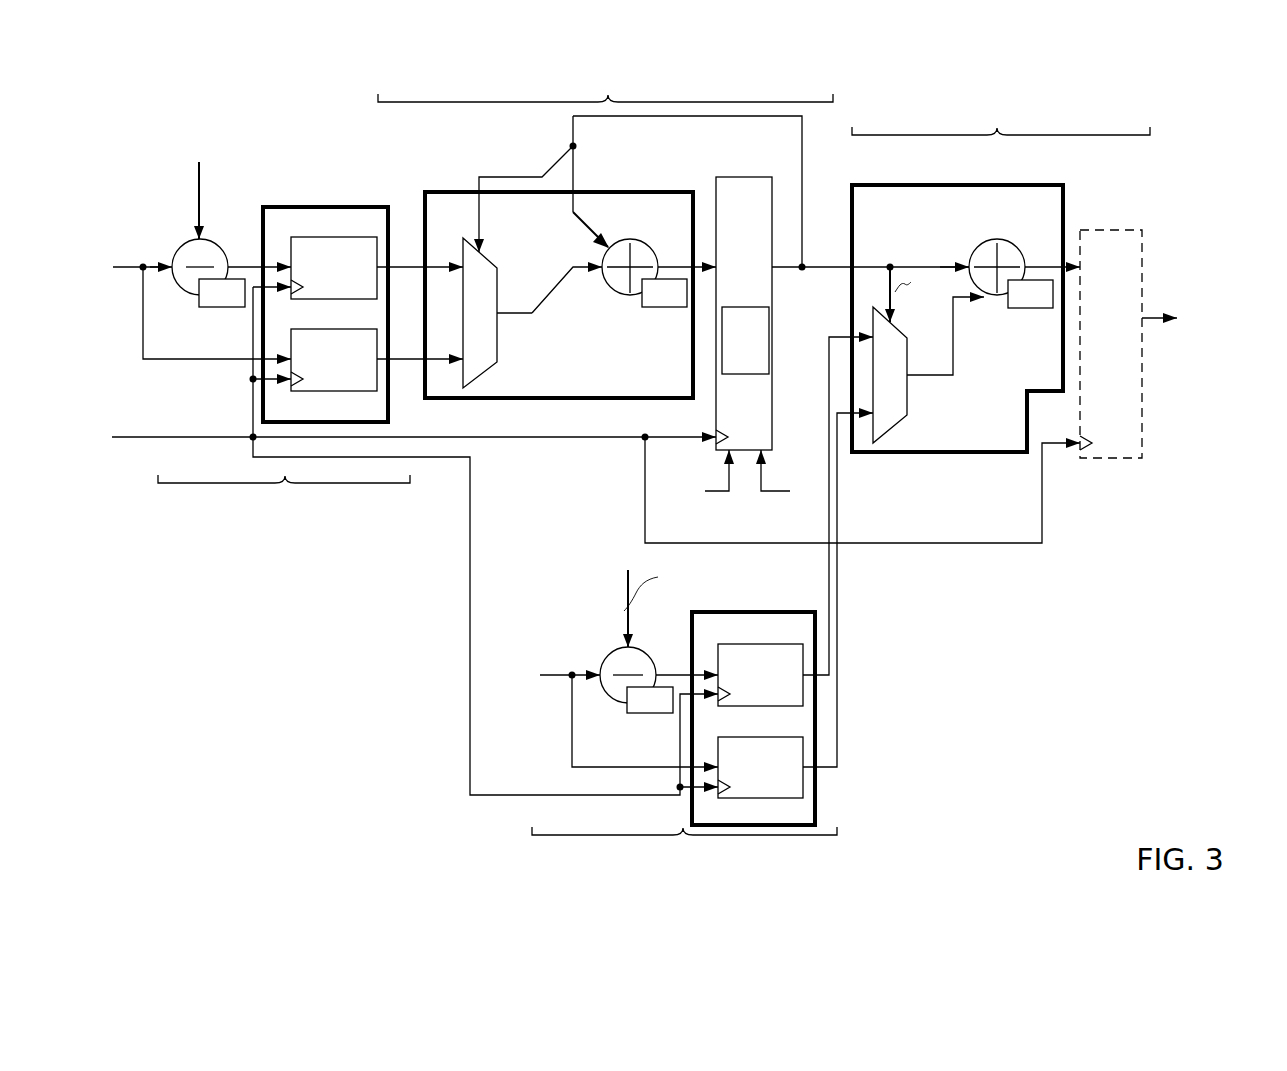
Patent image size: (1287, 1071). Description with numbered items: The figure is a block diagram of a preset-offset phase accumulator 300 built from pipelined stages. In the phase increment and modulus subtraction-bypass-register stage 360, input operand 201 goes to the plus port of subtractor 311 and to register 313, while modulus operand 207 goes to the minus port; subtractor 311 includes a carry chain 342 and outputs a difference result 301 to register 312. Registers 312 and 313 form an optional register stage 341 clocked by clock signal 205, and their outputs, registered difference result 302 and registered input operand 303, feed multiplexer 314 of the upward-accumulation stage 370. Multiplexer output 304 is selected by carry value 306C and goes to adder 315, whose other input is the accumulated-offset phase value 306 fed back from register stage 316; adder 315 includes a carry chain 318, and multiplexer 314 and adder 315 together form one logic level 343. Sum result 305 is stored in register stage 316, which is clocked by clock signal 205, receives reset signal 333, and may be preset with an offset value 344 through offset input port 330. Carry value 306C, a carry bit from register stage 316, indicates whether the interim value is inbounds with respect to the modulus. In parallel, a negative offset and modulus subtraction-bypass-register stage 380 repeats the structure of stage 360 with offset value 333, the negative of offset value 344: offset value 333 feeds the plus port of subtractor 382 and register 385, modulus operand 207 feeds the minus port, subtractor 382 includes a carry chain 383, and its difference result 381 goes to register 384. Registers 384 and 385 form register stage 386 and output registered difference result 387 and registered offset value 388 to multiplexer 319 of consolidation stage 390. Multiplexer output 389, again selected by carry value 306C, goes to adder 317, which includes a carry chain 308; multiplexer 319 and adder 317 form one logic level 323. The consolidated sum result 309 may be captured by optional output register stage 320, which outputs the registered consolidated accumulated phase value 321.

The preset-offset phase accumulator 300 is at (223, 85).
The input operand 201 is at (124, 262).
The modulus operand 207 is at (202, 185).
The difference result 301 is at (220, 262).
The subtractor 311 is at (181, 292).
The carry chain 342 is at (227, 309).
The register stage 341 is at (296, 207).
The register 312 is at (331, 238).
The register 313 is at (340, 410).
The registered difference result 302 is at (408, 262).
The registered input operand 303 is at (396, 362).
The logic level 343 is at (542, 400).
The multiplexer output 304 is at (559, 269).
The multiplexer 314 is at (500, 330).
The adder 315 is at (611, 294).
The carry value 306C is at (482, 176).
The sum result 305 is at (663, 244).
The carry chain 318 is at (660, 310).
The accumulated-offset phase value 306 is at (590, 210).
The register stage 316 is at (730, 178).
The offset value 344 is at (745, 340).
The upward-accumulation stage 370 is at (605, 86).
The clock signal 205 is at (206, 440).
The phase increment and modulus subtraction-bypass-register stage 360 is at (284, 497).
The offset value 333 is at (708, 494).
The offset input port 330 is at (792, 526).
The registered difference result 387 is at (826, 336).
The registered offset value 388 is at (843, 772).
The consolidation stage 390 is at (1001, 121).
The logic level 323 is at (1065, 205).
The multiplexer 319 is at (912, 393).
The multiplexer output 389 is at (958, 352).
The adder 317 is at (992, 236).
The sum result 309 is at (1018, 262).
The carry chain 308 is at (1034, 312).
The output register stage 320 is at (1105, 460).
The registered consolidated accumulated phase value 321 is at (1152, 314).
The negative offset and modulus subtraction-bypass-register stage 380 is at (684, 848).
The difference result 381 is at (640, 674).
The subtractor 382 is at (605, 696).
The carry chain 383 is at (672, 714).
The register stage 386 is at (730, 610).
The register 384 is at (760, 644).
The register 385 is at (770, 798).